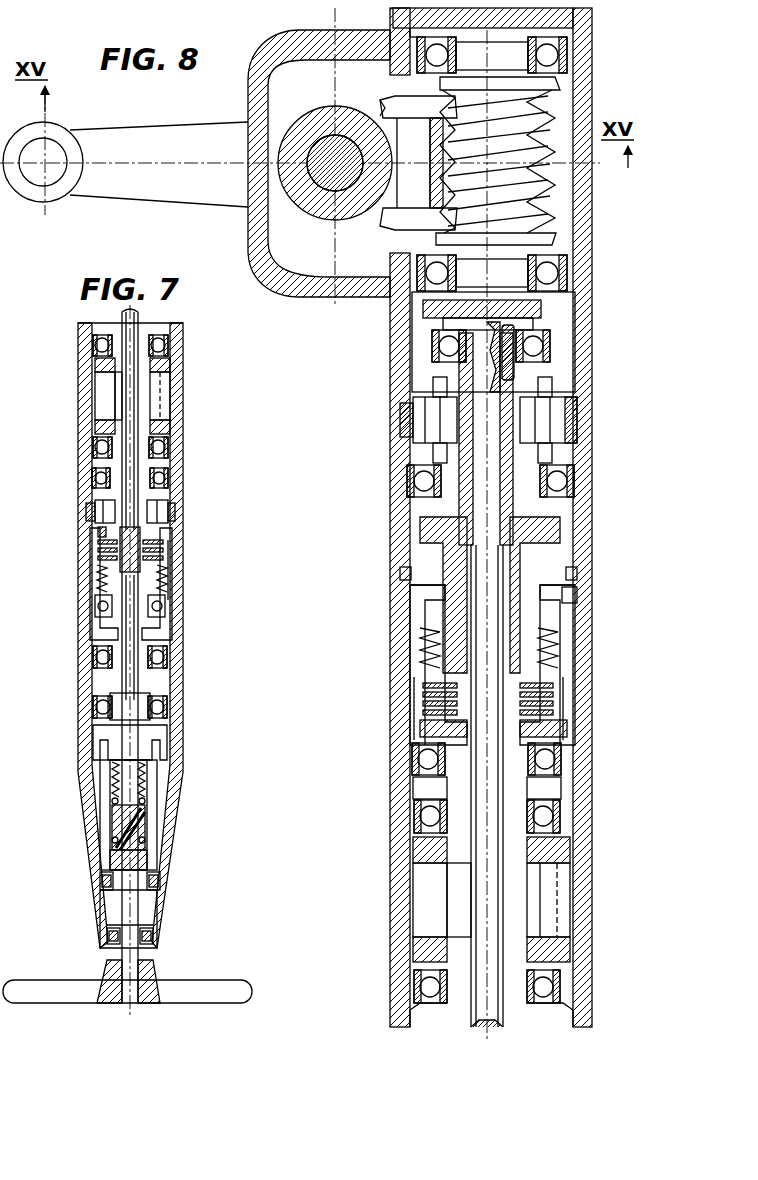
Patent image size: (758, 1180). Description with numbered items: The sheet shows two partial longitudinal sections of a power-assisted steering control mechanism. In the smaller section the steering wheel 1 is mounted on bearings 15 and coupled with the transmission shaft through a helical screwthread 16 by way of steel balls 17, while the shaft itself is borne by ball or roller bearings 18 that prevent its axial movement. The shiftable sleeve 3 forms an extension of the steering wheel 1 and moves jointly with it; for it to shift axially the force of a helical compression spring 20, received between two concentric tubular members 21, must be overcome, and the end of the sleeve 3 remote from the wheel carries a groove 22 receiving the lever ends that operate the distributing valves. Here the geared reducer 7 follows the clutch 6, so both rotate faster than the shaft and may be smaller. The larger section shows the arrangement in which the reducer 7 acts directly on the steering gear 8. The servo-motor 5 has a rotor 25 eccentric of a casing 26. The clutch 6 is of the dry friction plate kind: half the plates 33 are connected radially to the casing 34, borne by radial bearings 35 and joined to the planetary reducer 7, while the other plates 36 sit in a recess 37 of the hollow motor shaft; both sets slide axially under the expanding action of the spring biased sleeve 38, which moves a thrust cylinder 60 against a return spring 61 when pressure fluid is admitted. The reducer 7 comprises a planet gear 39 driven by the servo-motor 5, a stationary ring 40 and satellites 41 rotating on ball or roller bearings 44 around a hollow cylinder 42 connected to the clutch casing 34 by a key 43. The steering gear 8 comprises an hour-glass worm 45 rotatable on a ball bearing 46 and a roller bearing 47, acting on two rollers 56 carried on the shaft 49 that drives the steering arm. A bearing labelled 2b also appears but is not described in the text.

In FIG. 7, the steering wheel 1 is at (42, 984).
In FIG. 7, the shiftable sleeve 3 is at (172, 768).
In FIG. 8, the servo-motor 5 is at (563, 897).
In FIG. 7, the servo-motor 5 is at (168, 401).
In FIG. 8, the clutch 6 is at (563, 722).
In FIG. 7, the clutch 6 is at (175, 560).
In FIG. 8, the geared reducer 7 is at (580, 432).
In FIG. 7, the geared reducer 7 is at (175, 519).
In FIG. 8, the steering gear 8 is at (566, 102).
In FIG. 7, the bearings 15 is at (160, 882).
In FIG. 7, the helical screwthread 16 is at (160, 830).
In FIG. 7, the steel balls 17 is at (158, 848).
In FIG. 7, the ball or roller bearings 18 is at (168, 705).
In FIG. 7, the helical compression spring 20 is at (105, 778).
In FIG. 7, the concentric tubular members 21 is at (155, 790).
In FIG. 7, the groove 22 is at (168, 742).
In FIG. 8, the rotor 25 is at (432, 912).
In FIG. 7, the rotor 25 is at (160, 381).
In FIG. 8, the casing 26 is at (402, 882).
In FIG. 7, the casing 26 is at (90, 395).
In FIG. 8, the bearing 2b is at (455, 810).
In FIG. 8, the clutch plates 33 is at (552, 705).
In FIG. 7, the clutch plates 33 is at (155, 545).
In FIG. 8, the casing 34 is at (555, 672).
In FIG. 7, the casing 34 is at (167, 582).
In FIG. 8, the radial bearings 35 is at (548, 758).
In FIG. 7, the radial bearings 35 is at (165, 660).
In FIG. 8, the clutch plates 36 is at (430, 700).
In FIG. 7, the clutch plates 36 is at (100, 552).
In FIG. 8, the recess 37 is at (415, 740).
In FIG. 8, the spring biased sleeve 38 is at (578, 605).
In FIG. 7, the spring biased sleeve 38 is at (95, 608).
In FIG. 8, the planet gear 39 is at (415, 421).
In FIG. 8, the stationary ring 40 is at (557, 420).
In FIG. 7, the stationary ring 40 is at (165, 511).
In FIG. 8, the satellites 41 is at (428, 410).
In FIG. 7, the satellites 41 is at (98, 509).
In FIG. 8, the hollow cylinder 42 is at (548, 372).
In FIG. 7, the hollow cylinder 42 is at (95, 535).
In FIG. 8, the key 43 is at (560, 318).
In FIG. 8, the ball or roller bearings 44 is at (560, 347).
In FIG. 7, the ball or roller bearings 44 is at (165, 478).
In FIG. 8, the worm 45 is at (542, 188).
In FIG. 8, the ball bearing 46 is at (578, 55).
In FIG. 8, the roller bearing 47 is at (573, 265).
In FIG. 8, the shaft 49 is at (345, 183).
In FIG. 8, the rollers 56 is at (392, 100).
In FIG. 8, the thrust cylinder 60 is at (405, 605).
In FIG. 8, the return spring 61 is at (415, 640).